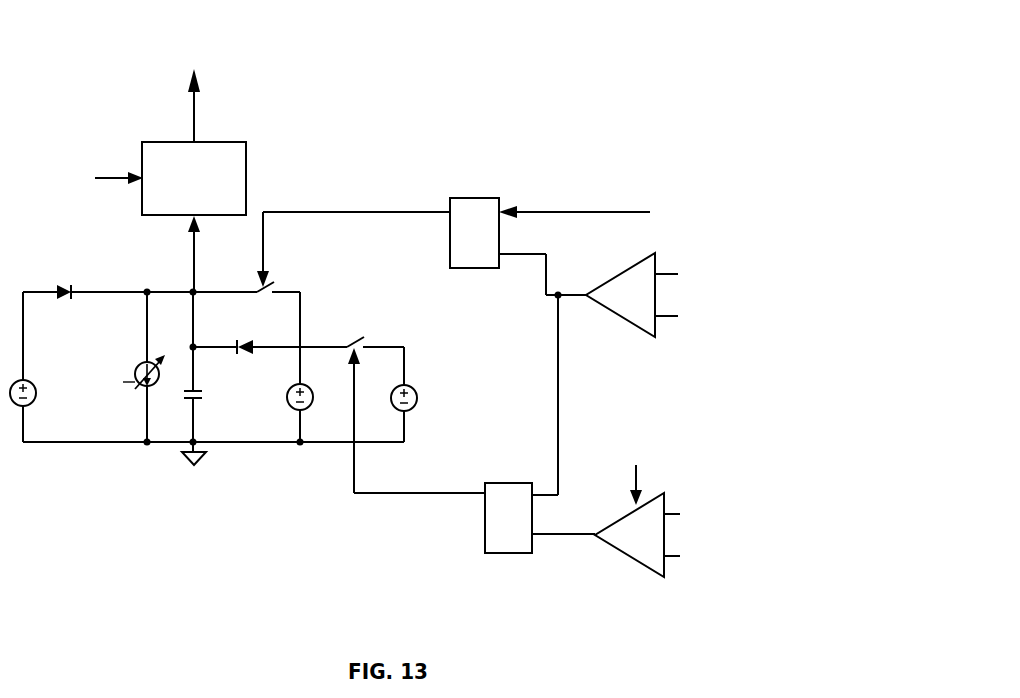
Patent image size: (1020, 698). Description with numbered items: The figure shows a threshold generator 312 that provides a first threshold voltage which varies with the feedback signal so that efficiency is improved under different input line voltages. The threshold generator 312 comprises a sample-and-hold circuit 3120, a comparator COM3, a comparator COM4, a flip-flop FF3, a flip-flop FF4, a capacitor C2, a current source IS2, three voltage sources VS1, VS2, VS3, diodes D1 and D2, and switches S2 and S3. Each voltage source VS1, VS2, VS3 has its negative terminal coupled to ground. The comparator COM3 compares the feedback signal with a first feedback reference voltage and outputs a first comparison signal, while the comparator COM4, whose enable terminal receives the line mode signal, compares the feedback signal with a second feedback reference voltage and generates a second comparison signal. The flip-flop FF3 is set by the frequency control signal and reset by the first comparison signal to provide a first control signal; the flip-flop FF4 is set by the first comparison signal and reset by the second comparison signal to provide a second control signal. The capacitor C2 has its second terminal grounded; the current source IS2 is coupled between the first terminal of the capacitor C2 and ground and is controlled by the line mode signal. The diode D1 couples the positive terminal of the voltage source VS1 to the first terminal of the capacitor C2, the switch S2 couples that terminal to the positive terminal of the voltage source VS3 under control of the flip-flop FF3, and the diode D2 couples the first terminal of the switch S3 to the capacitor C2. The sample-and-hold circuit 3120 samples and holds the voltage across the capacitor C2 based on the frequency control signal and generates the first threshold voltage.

The threshold generator 312 is at (427, 65).
The sample-and-hold circuit 3120 is at (163, 220).
The diode D1 is at (65, 306).
The diode D2 is at (245, 334).
The voltage source VS1 is at (38, 406).
The voltage source VS2 is at (423, 408).
The voltage source VS3 is at (317, 408).
The current source IS2 is at (138, 364).
The capacitor C2 is at (205, 407).
The switch S2 is at (281, 281).
The switch S3 is at (367, 331).
The flip-flop FF3 is at (474, 223).
The flip-flop FF4 is at (509, 507).
The comparator COM3 is at (620, 295).
The comparator COM4 is at (629, 535).